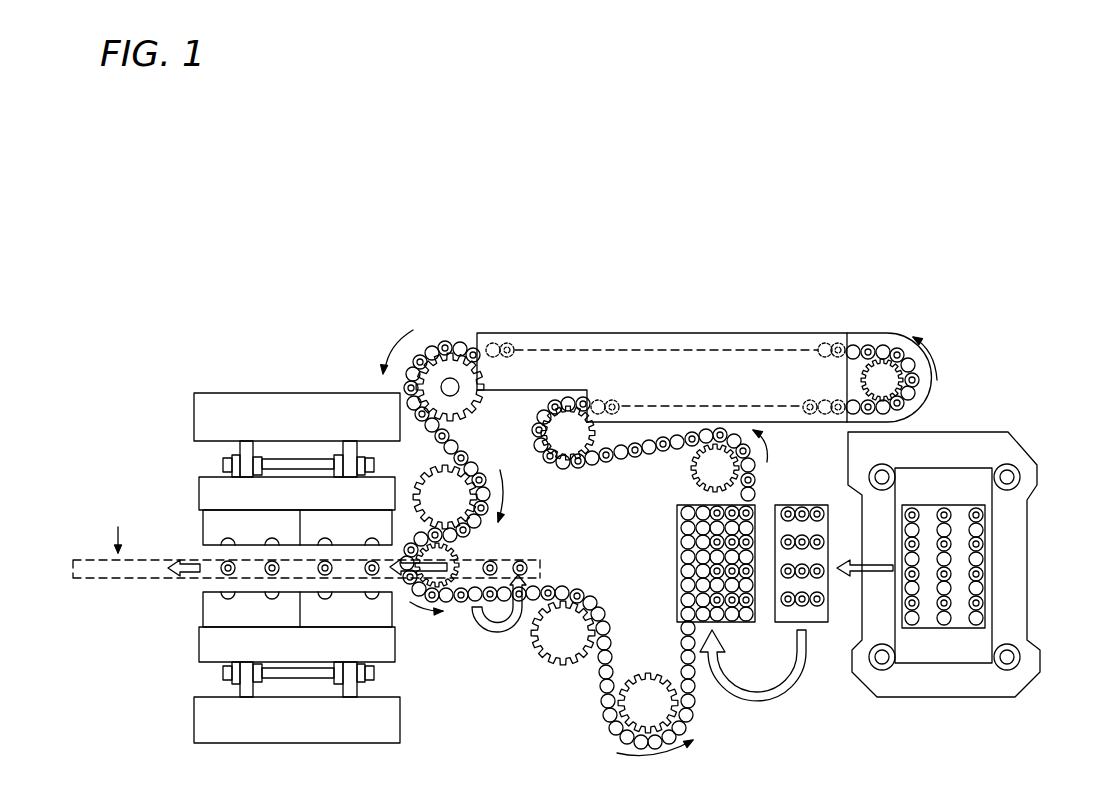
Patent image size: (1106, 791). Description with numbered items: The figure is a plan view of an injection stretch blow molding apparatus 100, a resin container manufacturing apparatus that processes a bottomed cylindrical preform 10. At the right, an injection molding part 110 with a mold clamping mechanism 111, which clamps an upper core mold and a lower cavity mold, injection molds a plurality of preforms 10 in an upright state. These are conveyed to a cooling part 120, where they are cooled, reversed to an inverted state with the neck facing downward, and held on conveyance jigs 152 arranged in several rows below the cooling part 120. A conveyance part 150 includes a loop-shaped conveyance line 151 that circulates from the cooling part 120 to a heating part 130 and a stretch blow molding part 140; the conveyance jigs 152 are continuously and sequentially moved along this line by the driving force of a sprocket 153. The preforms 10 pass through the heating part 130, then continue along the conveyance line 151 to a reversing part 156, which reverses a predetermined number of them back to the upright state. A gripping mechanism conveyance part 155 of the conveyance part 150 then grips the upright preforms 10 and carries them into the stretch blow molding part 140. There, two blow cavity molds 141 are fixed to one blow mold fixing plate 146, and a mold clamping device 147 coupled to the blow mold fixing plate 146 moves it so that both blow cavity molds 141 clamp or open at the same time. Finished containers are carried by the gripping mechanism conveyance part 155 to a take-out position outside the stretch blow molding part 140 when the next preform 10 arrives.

The injection stretch blow molding apparatus 100 is at (962, 227).
The preform 10 is at (333, 572).
The injection molding part 110 is at (1037, 438).
The mold clamping mechanism 111 is at (1015, 598).
The cooling part 120 is at (766, 628).
The heating part 130 is at (687, 322).
The stretch blow molding part 140 is at (310, 345).
The blow cavity mold 141 is at (220, 518).
The blow mold fixing plate 146 is at (213, 485).
The mold clamping device 147 is at (242, 445).
The conveyance part 150 is at (611, 678).
The conveyance line 151 is at (603, 670).
The conveyance jig 152 is at (762, 545).
The sprocket 153 is at (698, 470).
The gripping mechanism conveyance part 155 is at (542, 578).
The reversing part 156 is at (490, 642).